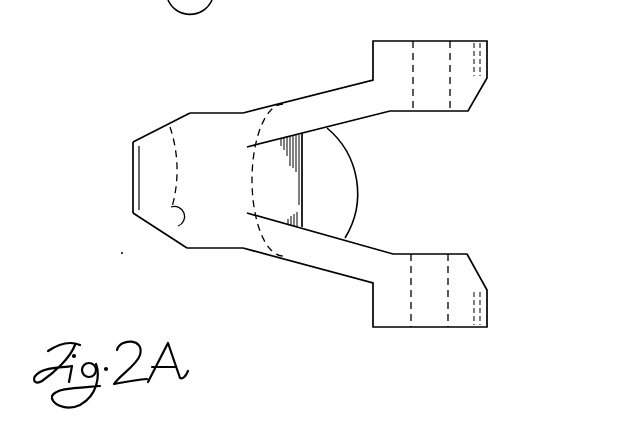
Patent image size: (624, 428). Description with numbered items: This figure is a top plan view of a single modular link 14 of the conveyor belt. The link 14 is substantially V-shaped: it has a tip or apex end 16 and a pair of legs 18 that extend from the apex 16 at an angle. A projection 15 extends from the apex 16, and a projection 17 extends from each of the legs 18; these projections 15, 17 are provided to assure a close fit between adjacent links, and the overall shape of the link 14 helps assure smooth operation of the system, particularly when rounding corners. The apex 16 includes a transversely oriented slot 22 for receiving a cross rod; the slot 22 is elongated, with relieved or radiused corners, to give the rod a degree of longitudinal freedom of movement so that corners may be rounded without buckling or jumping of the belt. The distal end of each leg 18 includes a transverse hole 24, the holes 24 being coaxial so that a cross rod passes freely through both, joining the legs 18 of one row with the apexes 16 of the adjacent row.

The link 14 is at (310, 270).
The projection 15 is at (177, 121).
The tip or apex end 16 is at (132, 187).
The projection 17 is at (462, 113).
The leg 18 is at (345, 183).
The slot 22 is at (178, 226).
The transverse hole 24 is at (450, 63).